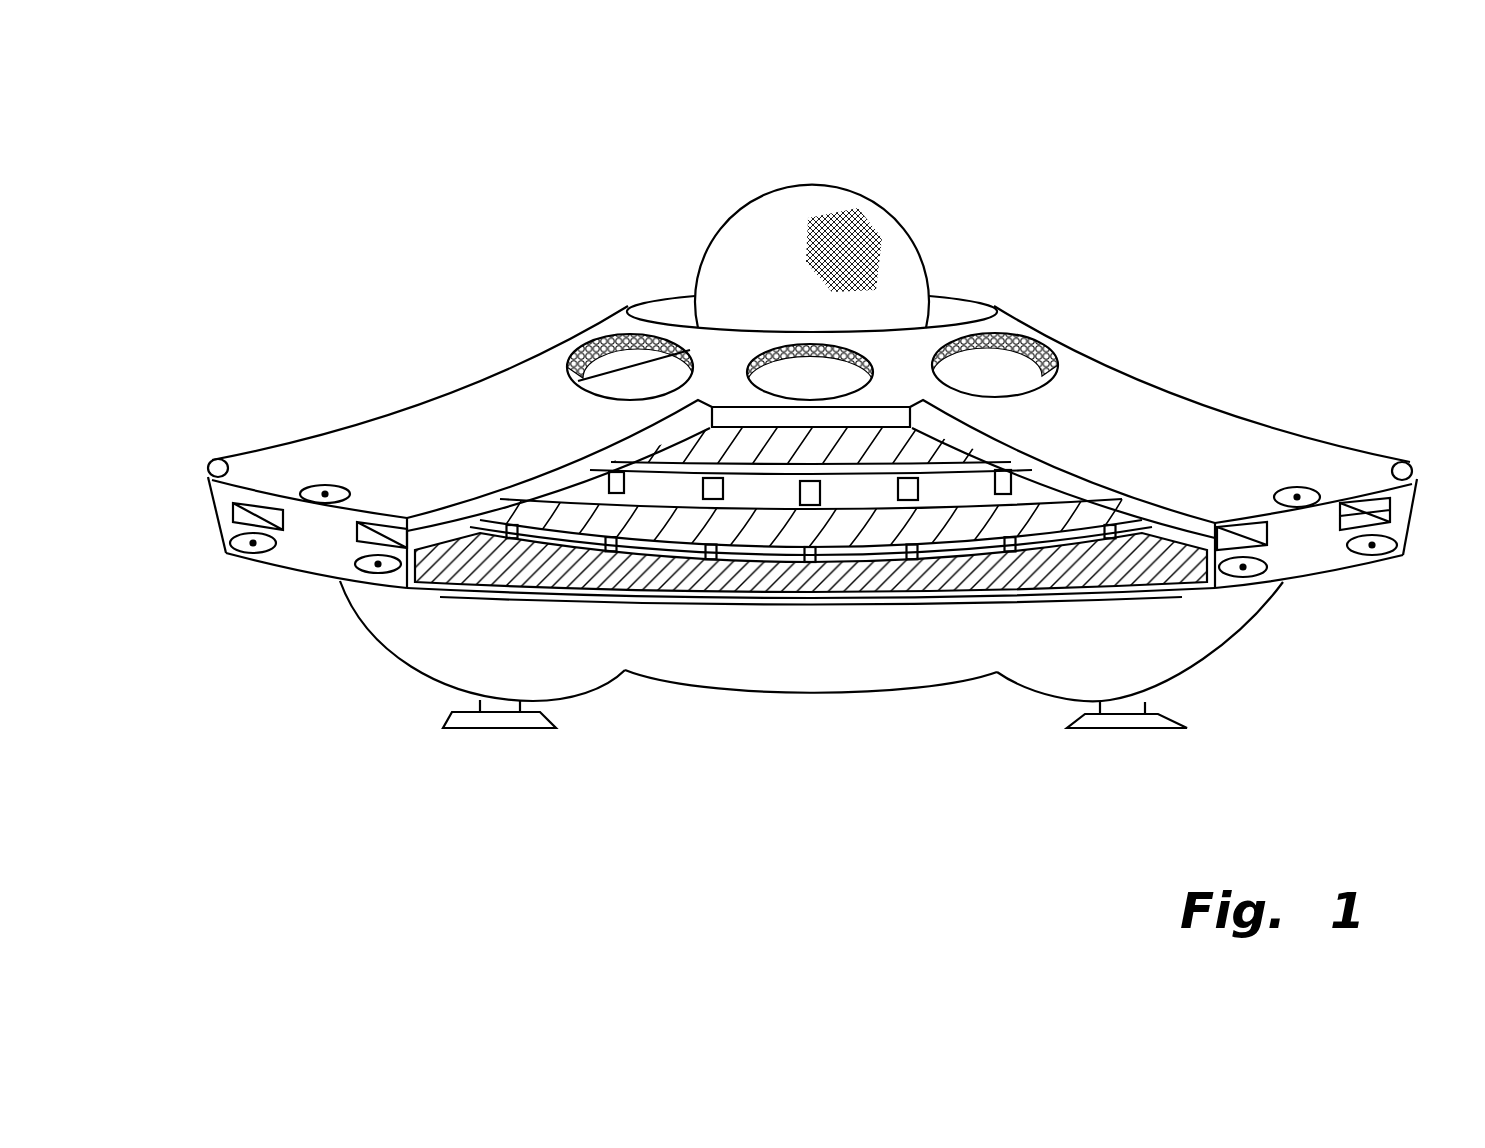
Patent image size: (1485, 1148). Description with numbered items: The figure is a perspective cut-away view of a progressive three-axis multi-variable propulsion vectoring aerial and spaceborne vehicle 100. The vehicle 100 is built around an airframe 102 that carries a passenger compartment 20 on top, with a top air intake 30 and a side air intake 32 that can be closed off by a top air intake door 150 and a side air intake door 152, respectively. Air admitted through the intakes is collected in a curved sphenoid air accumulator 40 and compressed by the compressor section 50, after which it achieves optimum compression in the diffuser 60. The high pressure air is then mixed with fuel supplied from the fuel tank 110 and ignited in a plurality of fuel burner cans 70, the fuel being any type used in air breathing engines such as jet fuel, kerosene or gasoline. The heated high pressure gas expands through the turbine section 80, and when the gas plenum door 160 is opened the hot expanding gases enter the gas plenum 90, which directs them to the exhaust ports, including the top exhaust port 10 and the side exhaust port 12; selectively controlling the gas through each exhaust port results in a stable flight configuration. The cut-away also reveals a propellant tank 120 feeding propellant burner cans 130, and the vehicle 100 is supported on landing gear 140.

The progressive 3-axis multi-variable propulsion vectoring aerial and spaceborne veh 100 is at (1052, 216).
The passenger compartment 20 is at (866, 186).
The top air intake 30 is at (1035, 340).
The curved sphenoid air accumulator 40 is at (738, 418).
The compressor section 50 is at (728, 445).
The diffuser 60 is at (855, 414).
The fuel burner cans 70 is at (1010, 478).
The turbine section 80 is at (585, 505).
The gas plenum 90 is at (1127, 580).
The airframe 102 is at (394, 463).
The top exhaust port 10 is at (1236, 456).
The side exhaust port 12 is at (253, 545).
The side air intake 32 is at (1412, 462).
The side air intake door 152 is at (1363, 548).
The top air intake door 150 is at (620, 378).
The fuel tank 110 is at (397, 660).
The propellant tank 120 is at (1235, 650).
The propellant burner cans 130 is at (604, 537).
The landing gear 140 is at (443, 723).
The gas plenum door 160 is at (880, 552).